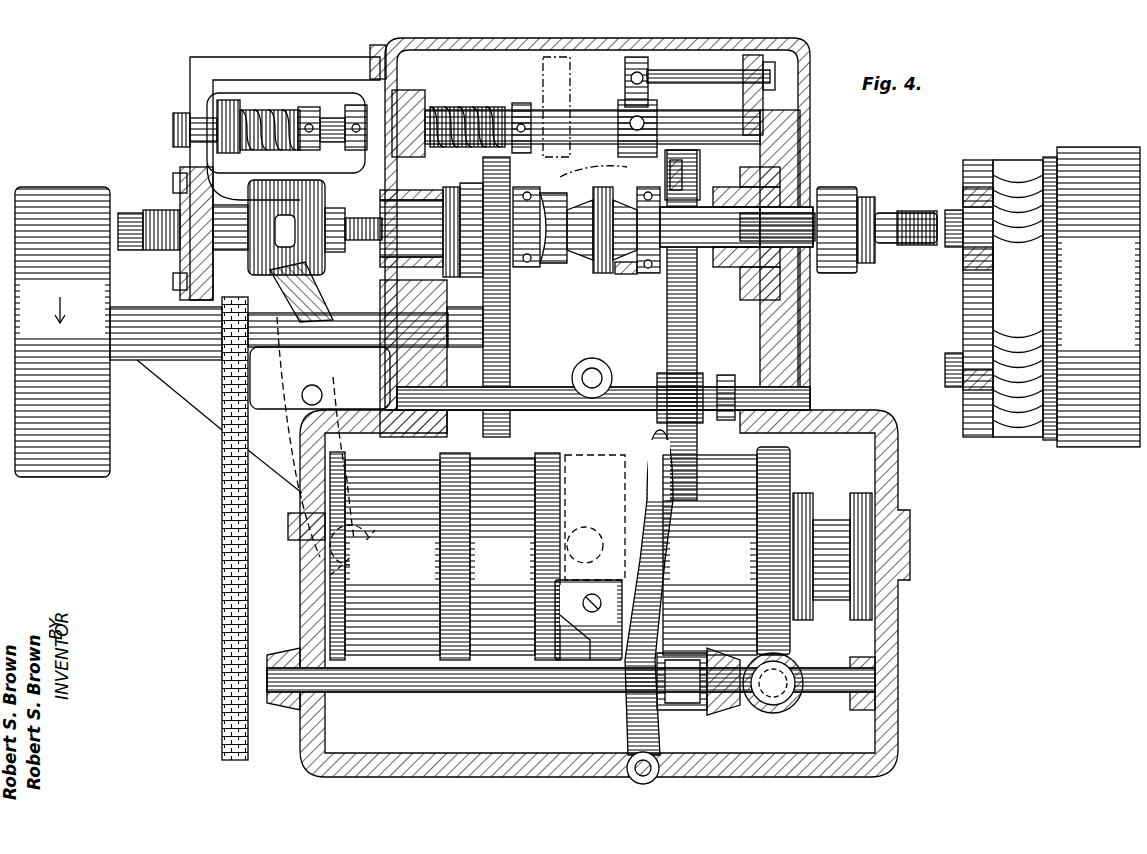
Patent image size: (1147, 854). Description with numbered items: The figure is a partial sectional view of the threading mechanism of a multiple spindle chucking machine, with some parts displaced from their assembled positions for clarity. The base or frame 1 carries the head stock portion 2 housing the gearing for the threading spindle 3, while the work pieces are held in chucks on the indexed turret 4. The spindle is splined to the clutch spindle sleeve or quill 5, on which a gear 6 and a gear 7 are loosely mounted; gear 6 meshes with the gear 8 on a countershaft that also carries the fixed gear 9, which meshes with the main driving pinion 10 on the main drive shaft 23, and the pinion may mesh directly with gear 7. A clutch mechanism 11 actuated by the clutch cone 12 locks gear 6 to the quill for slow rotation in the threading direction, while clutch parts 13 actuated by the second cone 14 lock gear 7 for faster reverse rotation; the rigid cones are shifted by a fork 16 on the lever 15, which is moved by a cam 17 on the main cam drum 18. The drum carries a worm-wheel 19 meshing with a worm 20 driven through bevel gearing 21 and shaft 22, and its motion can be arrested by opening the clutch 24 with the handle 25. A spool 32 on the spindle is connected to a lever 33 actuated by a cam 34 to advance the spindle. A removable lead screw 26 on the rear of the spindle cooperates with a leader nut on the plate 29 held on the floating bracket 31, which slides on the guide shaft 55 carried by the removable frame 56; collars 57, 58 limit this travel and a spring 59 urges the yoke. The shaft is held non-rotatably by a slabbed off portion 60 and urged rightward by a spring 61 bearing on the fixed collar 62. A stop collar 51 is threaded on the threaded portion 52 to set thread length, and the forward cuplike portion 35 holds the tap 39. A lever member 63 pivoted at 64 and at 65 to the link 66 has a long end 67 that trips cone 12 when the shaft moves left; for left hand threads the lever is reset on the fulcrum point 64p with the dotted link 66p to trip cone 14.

The base or frame 1 is at (896, 503).
The head stock portion 2 is at (800, 333).
The threading spindle 3 is at (790, 218).
The turret 4 is at (1100, 150).
The clutch spindle sleeve (quill) 5 is at (800, 192).
The gear 6 is at (697, 288).
The gear 7 is at (512, 275).
The gear 8 is at (703, 351).
The fixed gear 9 is at (510, 385).
The main driving pinion 10 is at (511, 340).
The clutch mechanism 11 is at (638, 265).
The clutch cone 12 is at (613, 490).
The clutch parts 13 is at (512, 270).
The clutch cone 14 is at (553, 250).
The lever 15 is at (592, 366).
The fork 16 is at (562, 505).
The cam 17 is at (565, 525).
The main cam drum 18 is at (445, 556).
The worm-wheel 19 is at (790, 472).
The worm 20 is at (800, 708).
The bevel gearing 21 is at (738, 715).
The shaft 22 is at (445, 690).
The main drive shaft 23 is at (230, 382).
The clutch 24 is at (678, 705).
The handle 25 is at (665, 530).
The lead screw 26 is at (160, 210).
The removable plate 29 is at (180, 264).
The floating lead arm bracket (yoke) 31 is at (205, 162).
The spool 32 is at (318, 268).
The lever 33 is at (295, 365).
The cam 34 is at (376, 527).
The cuplike portion 35 is at (850, 188).
The tap 39 is at (922, 218).
The collar 51 is at (338, 252).
The screw threaded portion 52 is at (366, 216).
The guide shaft 55 is at (178, 128).
The supporting frame or base 56 is at (378, 48).
The collar 57 is at (314, 106).
The collar 58 is at (355, 104).
The spring 59 is at (278, 108).
The slabbed off portion 60 is at (412, 90).
The spring 61 is at (472, 108).
The fixed collar 62 is at (521, 103).
The lever member 63 is at (628, 85).
The pivot 64 is at (645, 122).
The fulcrum point 64p is at (558, 118).
The pivot 65 is at (650, 60).
The link or bolt 66 is at (716, 74).
The link or bolt 66p is at (593, 162).
The long end of lever 67 is at (692, 180).